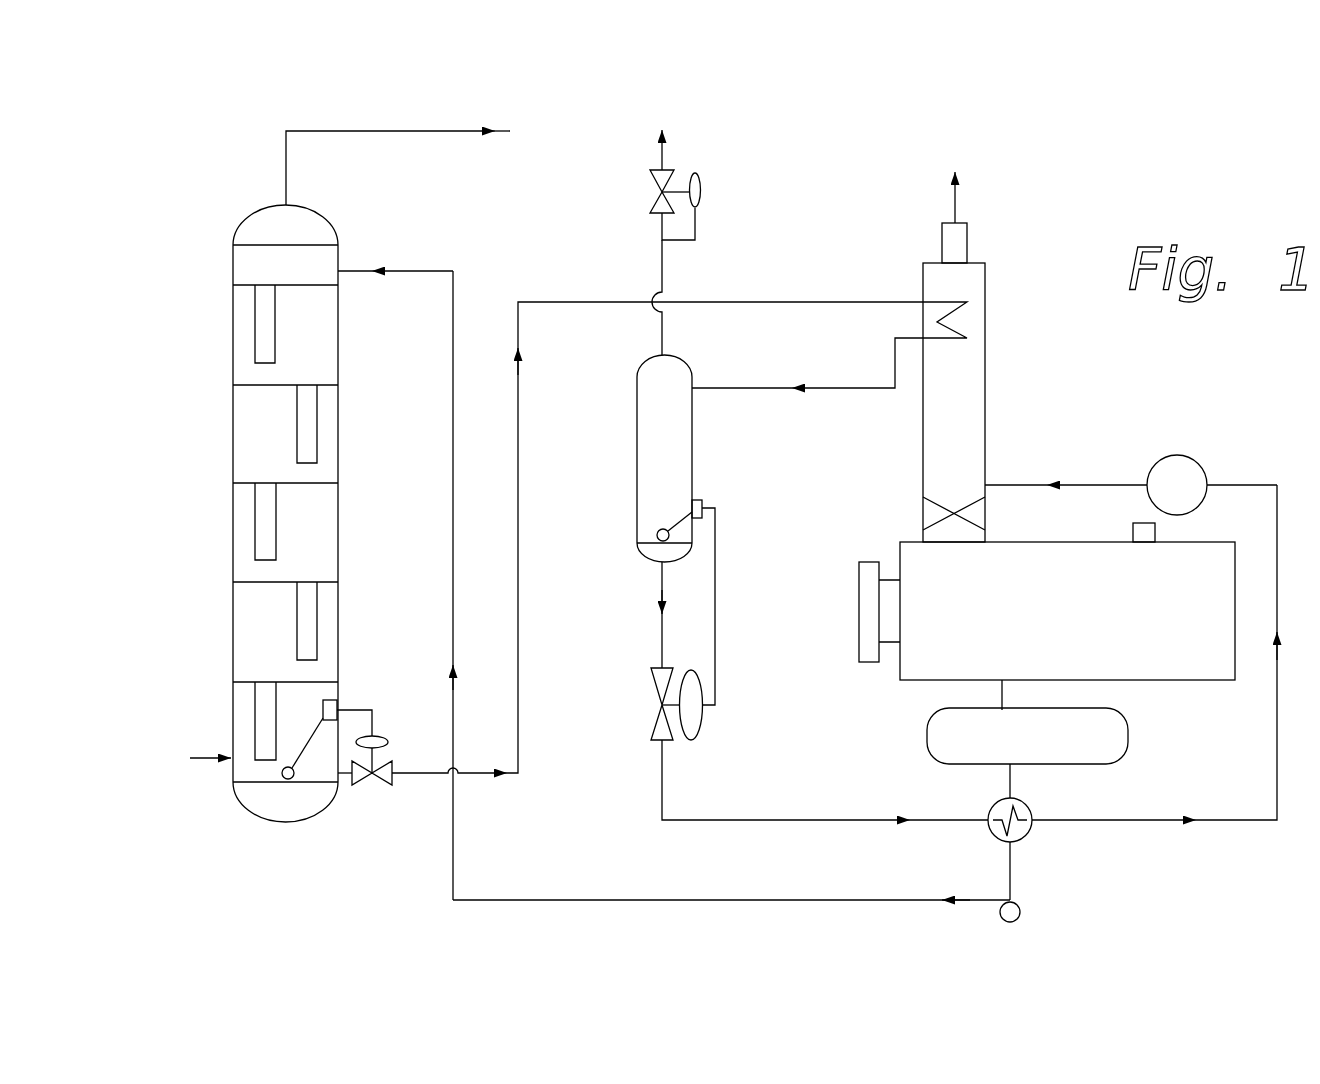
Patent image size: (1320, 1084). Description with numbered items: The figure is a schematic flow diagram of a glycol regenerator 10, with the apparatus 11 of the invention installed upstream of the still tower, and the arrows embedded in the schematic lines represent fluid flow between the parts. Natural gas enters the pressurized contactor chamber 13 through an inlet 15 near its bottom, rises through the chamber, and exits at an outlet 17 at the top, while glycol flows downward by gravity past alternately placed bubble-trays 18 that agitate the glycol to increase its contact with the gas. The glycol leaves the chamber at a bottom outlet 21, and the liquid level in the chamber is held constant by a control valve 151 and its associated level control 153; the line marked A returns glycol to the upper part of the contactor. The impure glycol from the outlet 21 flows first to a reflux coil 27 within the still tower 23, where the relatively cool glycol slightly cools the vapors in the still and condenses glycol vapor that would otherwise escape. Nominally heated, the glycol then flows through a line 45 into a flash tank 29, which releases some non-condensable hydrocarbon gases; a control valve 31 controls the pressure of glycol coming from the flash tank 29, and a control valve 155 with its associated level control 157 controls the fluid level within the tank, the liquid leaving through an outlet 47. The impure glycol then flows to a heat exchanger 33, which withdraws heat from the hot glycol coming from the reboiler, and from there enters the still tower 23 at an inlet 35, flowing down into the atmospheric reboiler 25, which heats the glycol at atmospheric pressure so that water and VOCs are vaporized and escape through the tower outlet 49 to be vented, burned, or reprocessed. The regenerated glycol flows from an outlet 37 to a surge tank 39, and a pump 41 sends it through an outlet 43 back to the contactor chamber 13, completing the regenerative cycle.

The glycol regenerator 10 is at (830, 186).
The apparatus 11 is at (1201, 456).
The contactor chamber 13 is at (312, 355).
The inlet 15 is at (208, 760).
The outlet 17 is at (286, 180).
The bubble-trays 18 is at (307, 484).
The outlet 21 is at (340, 782).
The still tower 23 is at (985, 355).
The atmospheric reboiler 25 is at (1050, 612).
The reflux coil 27 is at (955, 300).
The flash tank 29 is at (692, 437).
The control valve 31 is at (708, 208).
The heat exchanger 33 is at (1030, 810).
The inlet 35 is at (985, 484).
The outlet 37 is at (1002, 697).
The surge tank 39 is at (1128, 728).
The pump 41 is at (1020, 912).
The outlet 43 is at (990, 902).
The vapor inlet line 45 is at (663, 336).
The outlet 47 is at (662, 588).
The tower outlet 49 is at (956, 201).
The control valve 151 is at (386, 736).
The level control 153 is at (337, 705).
The control valve 155 is at (703, 724).
The level control 157 is at (703, 500).
The reflux line A is at (340, 268).